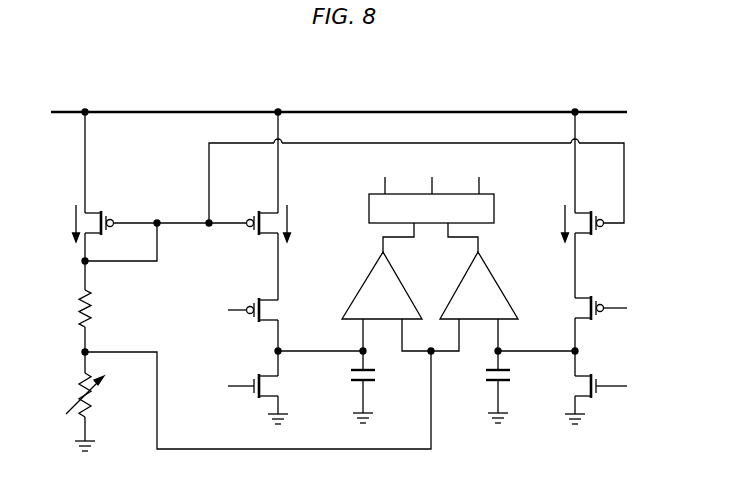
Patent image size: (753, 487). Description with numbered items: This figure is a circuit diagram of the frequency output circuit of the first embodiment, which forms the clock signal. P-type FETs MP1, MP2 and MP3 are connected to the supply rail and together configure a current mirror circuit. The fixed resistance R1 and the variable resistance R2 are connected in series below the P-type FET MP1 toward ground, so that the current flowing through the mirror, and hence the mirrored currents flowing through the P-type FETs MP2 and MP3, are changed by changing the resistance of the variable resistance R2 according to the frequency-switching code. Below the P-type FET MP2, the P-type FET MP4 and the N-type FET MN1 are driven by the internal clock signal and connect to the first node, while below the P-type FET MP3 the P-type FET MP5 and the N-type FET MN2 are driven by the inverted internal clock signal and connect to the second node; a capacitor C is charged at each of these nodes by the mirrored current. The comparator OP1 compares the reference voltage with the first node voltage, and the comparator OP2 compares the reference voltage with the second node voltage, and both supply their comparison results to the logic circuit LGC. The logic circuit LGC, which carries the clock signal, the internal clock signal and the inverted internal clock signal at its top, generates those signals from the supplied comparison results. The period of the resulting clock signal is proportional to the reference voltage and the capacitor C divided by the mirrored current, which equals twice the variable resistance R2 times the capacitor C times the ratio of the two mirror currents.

The P-channel FET MP1 is at (114, 217).
The P-channel FET MP2 is at (247, 227).
The P-channel FET MP3 is at (603, 230).
The P-channel FET MP4 is at (249, 315).
The P-channel FET MP5 is at (603, 317).
The N-channel FET MN1 is at (252, 392).
The N-channel FET MN2 is at (600, 394).
The fixed resistance R1 is at (71, 308).
The variable resistance R2 is at (78, 395).
The capacitor C is at (358, 384).
The logic circuit LGC is at (368, 204).
The comparator OP1 is at (364, 281).
The comparator OP2 is at (497, 283).